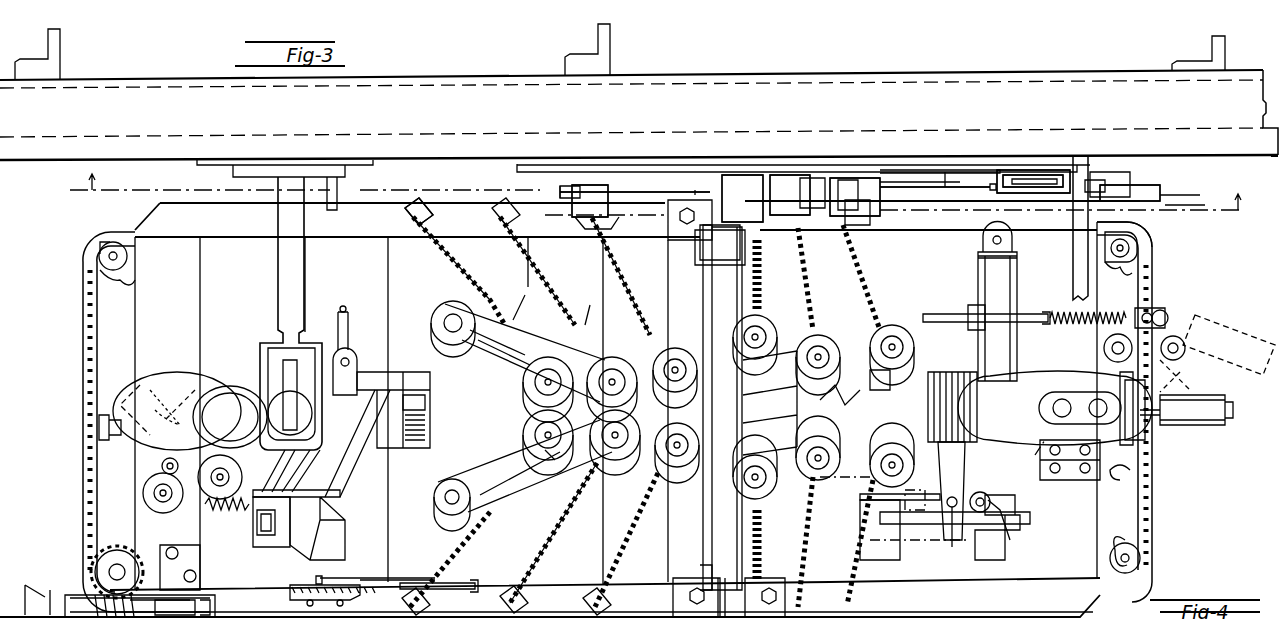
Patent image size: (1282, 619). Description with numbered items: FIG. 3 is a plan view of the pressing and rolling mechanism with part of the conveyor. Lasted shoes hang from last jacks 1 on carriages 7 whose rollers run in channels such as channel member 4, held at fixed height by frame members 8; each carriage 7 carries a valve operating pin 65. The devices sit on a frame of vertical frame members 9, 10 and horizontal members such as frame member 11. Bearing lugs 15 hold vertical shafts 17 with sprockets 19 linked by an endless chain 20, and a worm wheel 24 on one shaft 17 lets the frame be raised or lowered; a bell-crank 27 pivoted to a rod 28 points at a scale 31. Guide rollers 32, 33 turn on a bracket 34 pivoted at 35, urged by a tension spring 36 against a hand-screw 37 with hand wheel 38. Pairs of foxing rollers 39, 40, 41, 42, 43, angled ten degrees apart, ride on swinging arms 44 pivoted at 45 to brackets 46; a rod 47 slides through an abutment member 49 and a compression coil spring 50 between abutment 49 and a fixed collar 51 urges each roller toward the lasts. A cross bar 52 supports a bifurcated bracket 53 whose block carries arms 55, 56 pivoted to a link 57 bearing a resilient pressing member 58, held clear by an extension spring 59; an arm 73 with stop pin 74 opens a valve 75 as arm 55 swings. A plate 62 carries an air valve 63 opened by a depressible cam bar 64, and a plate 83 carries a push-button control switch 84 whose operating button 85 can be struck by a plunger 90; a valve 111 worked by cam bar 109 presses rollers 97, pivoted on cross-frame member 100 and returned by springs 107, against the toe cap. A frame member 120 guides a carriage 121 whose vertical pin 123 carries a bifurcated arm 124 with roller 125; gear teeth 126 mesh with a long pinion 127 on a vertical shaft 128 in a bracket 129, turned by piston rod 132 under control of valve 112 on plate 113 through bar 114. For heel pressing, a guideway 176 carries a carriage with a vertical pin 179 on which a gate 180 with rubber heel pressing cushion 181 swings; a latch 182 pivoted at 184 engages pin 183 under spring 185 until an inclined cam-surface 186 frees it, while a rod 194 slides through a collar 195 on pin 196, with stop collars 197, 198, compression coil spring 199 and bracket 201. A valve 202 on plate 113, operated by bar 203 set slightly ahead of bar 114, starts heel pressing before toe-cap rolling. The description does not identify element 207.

The last jack 1 is at (285, 257).
The channel member 4 is at (663, 197).
The carriage 7 is at (232, 170).
The frame member 8 is at (56, 47).
The vertical frame member 9 is at (175, 365).
The vertical frame member 10 is at (1116, 530).
The horizontal frame member 11 is at (452, 208).
The bearing lug 15 is at (126, 267).
The vertical shaft 17 is at (96, 256).
The sprocket 19 is at (126, 284).
The endless chain 20 is at (80, 296).
The worm wheel 24 is at (95, 562).
The bell-crank 27 is at (397, 588).
The rod 28 is at (439, 597).
The scale 31 is at (292, 595).
The roller 32 is at (150, 500).
The roller 33 is at (210, 490).
The bracket 34 is at (230, 417).
The pivot 35 is at (162, 462).
The tension spring 36 is at (200, 377).
The hand-screw 37 is at (186, 376).
The hand wheel 38 is at (92, 408).
The roller 39 is at (522, 384).
The roller 40 is at (604, 364).
The roller 41 is at (674, 348).
The roller 42 is at (796, 450).
The roller 43 is at (897, 324).
The swinging arm 44 is at (494, 362).
The pivot 45 is at (422, 314).
The bracket 46 is at (492, 295).
The rod 47 is at (592, 304).
The abutment member 49 is at (410, 206).
The compression coil spring 50 is at (432, 242).
The fixed collar 51 is at (498, 320).
The cross bar 52 is at (345, 263).
The bifurcated bracket 53 is at (428, 408).
The arm 55 is at (290, 470).
The arm 56 is at (413, 469).
The link 57 is at (278, 544).
The resilient pressing member 58 is at (340, 542).
The extension spring 59 is at (244, 536).
The plate 62 is at (538, 205).
The air valve 63 is at (588, 186).
The depressible cam bar 64 is at (642, 192).
The valve operating pin 65 is at (1140, 122).
The arm 73 is at (349, 374).
The stop pin 74 is at (356, 354).
The valve 75 is at (350, 330).
The plate 83 is at (846, 192).
The push-button control switch 84 is at (736, 178).
The operating button 85 is at (787, 188).
The plunger 90 is at (808, 178).
The roller 97 is at (700, 524).
The cross-frame member 100 is at (715, 408).
The spring 107 is at (738, 270).
The cam bar 109 is at (895, 181).
The valve 111 is at (840, 184).
The valve 112 is at (1137, 224).
The plate 113 is at (1095, 180).
The bar 114 is at (1145, 191).
The frame member 120 is at (910, 560).
The carriage 121 is at (998, 540).
The vertical pin 123 is at (950, 555).
The bifurcated arm 124 is at (958, 462).
The roller 125 is at (920, 334).
The gear teeth 126 is at (1000, 530).
The long pinion 127 is at (1014, 540).
The vertical shaft 128 is at (978, 500).
The bracket 129 is at (1008, 520).
The piston rod 132 is at (977, 264).
The guideway 176 is at (1179, 368).
The vertical pin 179 is at (1160, 352).
The gate 180 is at (1148, 436).
The rubber heel pressing cushion 181 is at (1138, 458).
The latch 182 is at (1229, 341).
The pin 183 is at (1186, 426).
The pivot 184 is at (1055, 408).
The spring 185 is at (1110, 355).
The inclined cam-surface 186 is at (1226, 410).
The rod 194 is at (929, 304).
The collar 195 is at (1148, 311).
The pin 196 is at (1155, 315).
The stop collar 197 is at (1160, 314).
The stop collar 198 is at (1044, 316).
The compression coil spring 199 is at (1092, 322).
The bracket 201 is at (968, 328).
The valve 202 is at (1013, 168).
The bar 203 is at (1072, 170).
The roller 207 is at (1106, 348).